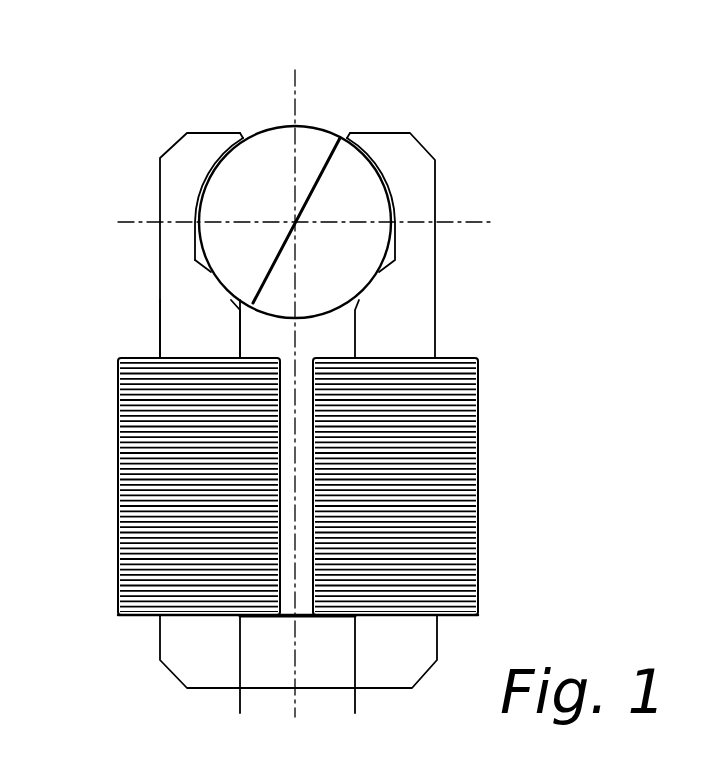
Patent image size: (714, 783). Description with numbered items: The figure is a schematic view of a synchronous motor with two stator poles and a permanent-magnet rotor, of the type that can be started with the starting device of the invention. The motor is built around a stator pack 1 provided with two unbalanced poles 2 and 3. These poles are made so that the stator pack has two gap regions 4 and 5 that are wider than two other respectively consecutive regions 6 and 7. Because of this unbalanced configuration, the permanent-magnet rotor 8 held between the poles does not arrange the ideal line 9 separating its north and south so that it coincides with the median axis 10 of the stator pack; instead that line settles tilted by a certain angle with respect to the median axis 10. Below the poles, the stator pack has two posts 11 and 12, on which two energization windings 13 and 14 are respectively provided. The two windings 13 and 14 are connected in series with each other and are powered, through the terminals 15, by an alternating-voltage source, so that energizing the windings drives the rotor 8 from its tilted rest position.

The stator pack 1 is at (452, 291).
The unbalanced pole 2 is at (425, 180).
The unbalanced pole 3 is at (185, 162).
The gap region 4 is at (373, 158).
The gap region 5 is at (208, 277).
The consecutive region 6 is at (390, 240).
The consecutive region 7 is at (222, 160).
The permanent-magnet rotor 8 is at (266, 109).
The ideal line 9 is at (340, 138).
The median axis 10 is at (295, 88).
The post 11 is at (407, 328).
The post 12 is at (178, 333).
The energization winding 13 is at (478, 573).
The energization winding 14 is at (118, 596).
The terminals 15 is at (355, 703).